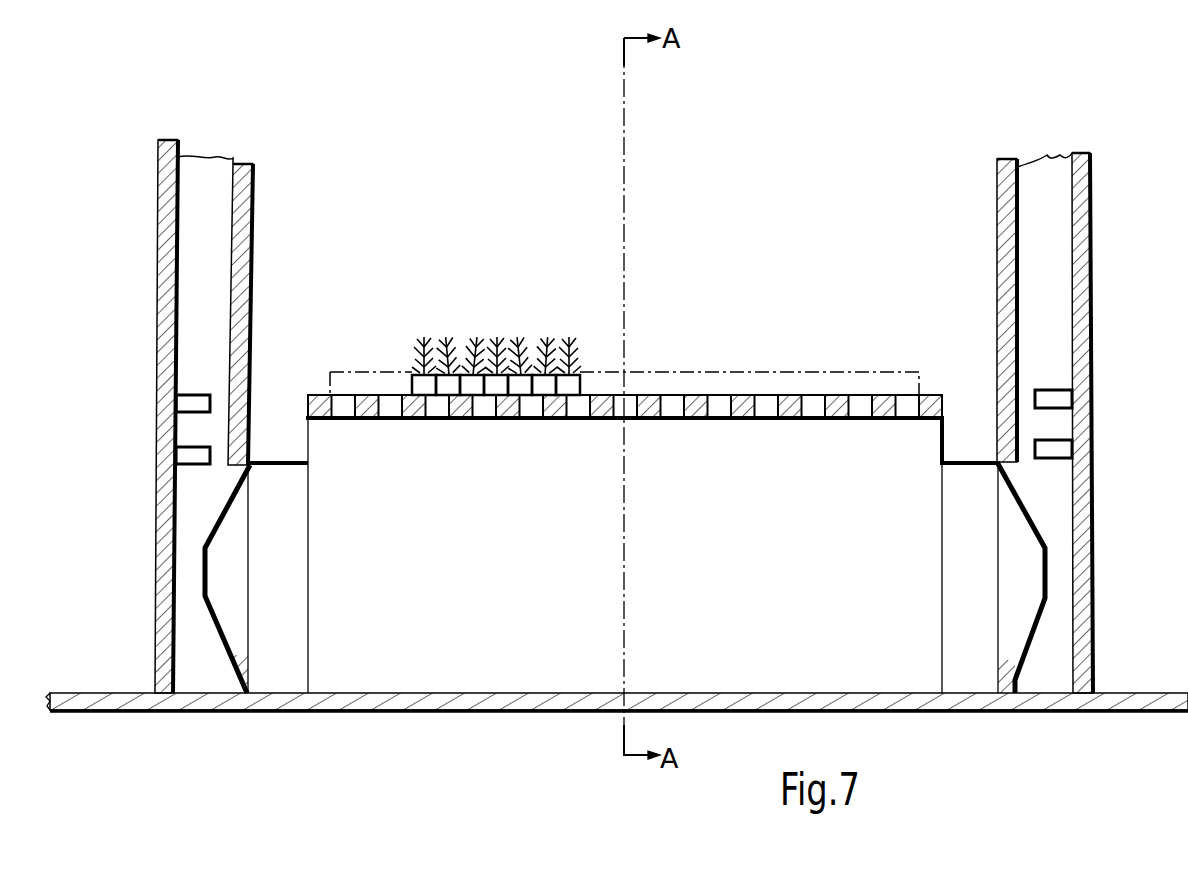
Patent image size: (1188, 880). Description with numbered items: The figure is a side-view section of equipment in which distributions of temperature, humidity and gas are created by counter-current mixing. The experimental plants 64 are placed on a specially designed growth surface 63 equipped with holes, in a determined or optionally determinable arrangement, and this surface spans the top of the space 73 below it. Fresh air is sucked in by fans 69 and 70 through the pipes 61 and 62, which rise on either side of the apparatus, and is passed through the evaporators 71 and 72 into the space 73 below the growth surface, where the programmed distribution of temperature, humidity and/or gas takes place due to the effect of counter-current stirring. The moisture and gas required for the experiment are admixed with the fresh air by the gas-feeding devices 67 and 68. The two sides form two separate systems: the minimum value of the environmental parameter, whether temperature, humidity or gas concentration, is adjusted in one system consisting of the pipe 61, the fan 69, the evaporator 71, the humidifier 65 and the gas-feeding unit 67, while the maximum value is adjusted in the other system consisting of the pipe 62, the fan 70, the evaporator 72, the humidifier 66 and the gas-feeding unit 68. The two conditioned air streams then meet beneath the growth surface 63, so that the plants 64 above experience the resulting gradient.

The pipe 61 is at (1052, 218).
The pipe 62 is at (208, 200).
The growth surface 63 is at (863, 395).
The experimental plants 64 is at (425, 392).
The humidifier 65 is at (1060, 399).
The humidifier 66 is at (198, 404).
The gas-feeding unit 67 is at (1055, 450).
The gas-feeding unit 68 is at (198, 456).
The fan 69 is at (1027, 563).
The fan 70 is at (232, 553).
The evaporator 71 is at (963, 618).
The evaporator 72 is at (277, 647).
The space below the growth surface 73 is at (765, 520).